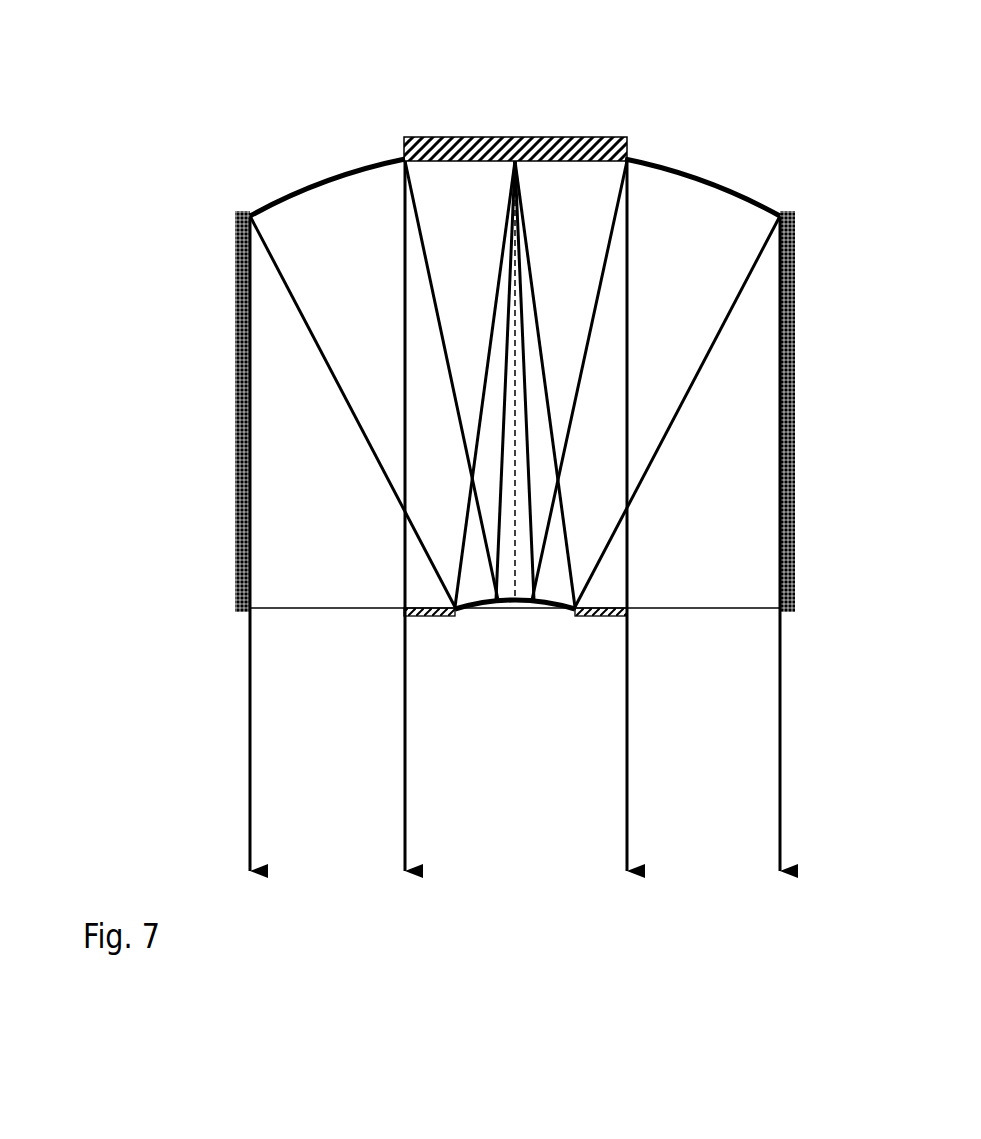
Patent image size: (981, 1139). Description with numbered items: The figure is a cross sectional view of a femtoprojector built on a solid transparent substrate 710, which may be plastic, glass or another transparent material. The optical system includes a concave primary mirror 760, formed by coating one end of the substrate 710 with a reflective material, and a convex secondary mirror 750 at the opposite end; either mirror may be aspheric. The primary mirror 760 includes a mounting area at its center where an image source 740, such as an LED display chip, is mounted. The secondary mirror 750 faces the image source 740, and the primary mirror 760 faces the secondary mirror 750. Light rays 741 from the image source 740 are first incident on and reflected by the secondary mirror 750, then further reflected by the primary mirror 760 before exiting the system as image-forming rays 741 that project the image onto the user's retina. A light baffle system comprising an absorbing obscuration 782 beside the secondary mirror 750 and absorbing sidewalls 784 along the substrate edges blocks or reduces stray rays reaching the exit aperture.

The transparent substrate 710 is at (266, 312).
The image source 740 is at (404, 138).
The light rays 741 is at (530, 258).
The secondary mirror 750 is at (480, 605).
The concave primary mirror 760 is at (298, 188).
The absorbing obscuration 782 is at (428, 617).
The sidewalls 784 is at (243, 488).